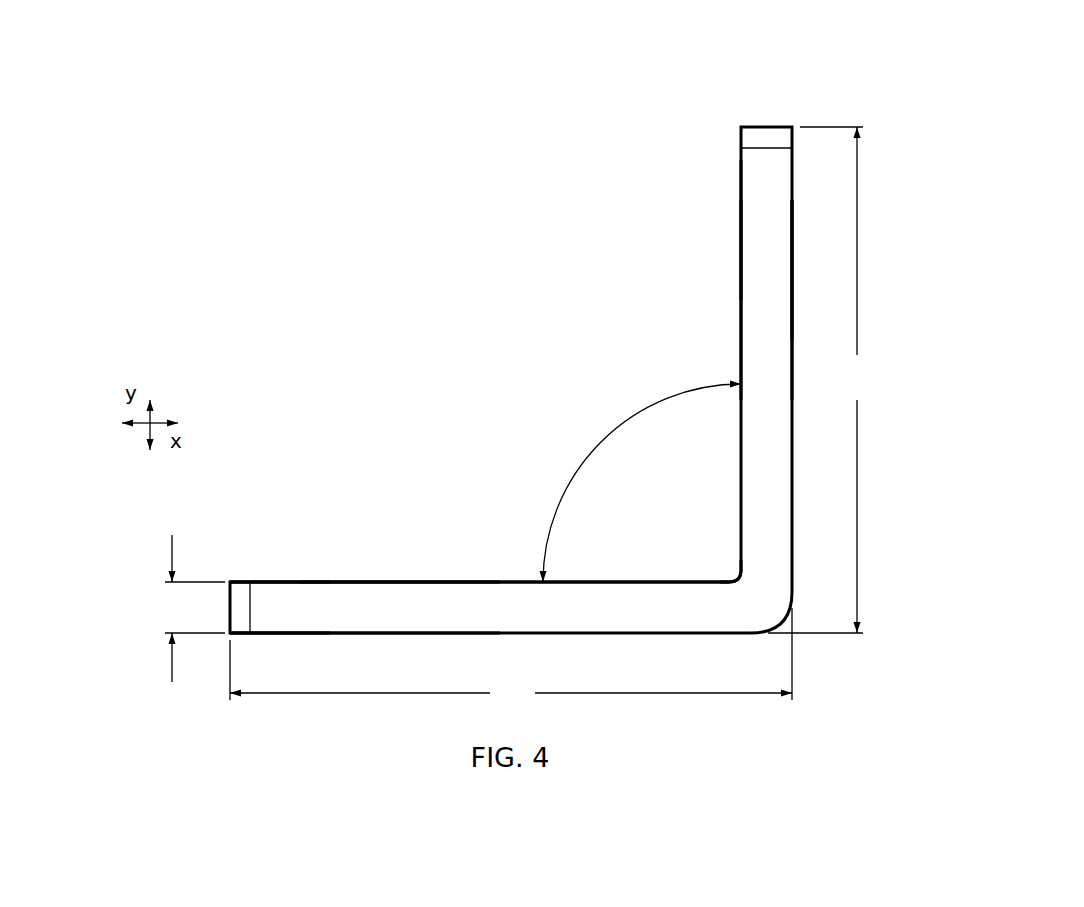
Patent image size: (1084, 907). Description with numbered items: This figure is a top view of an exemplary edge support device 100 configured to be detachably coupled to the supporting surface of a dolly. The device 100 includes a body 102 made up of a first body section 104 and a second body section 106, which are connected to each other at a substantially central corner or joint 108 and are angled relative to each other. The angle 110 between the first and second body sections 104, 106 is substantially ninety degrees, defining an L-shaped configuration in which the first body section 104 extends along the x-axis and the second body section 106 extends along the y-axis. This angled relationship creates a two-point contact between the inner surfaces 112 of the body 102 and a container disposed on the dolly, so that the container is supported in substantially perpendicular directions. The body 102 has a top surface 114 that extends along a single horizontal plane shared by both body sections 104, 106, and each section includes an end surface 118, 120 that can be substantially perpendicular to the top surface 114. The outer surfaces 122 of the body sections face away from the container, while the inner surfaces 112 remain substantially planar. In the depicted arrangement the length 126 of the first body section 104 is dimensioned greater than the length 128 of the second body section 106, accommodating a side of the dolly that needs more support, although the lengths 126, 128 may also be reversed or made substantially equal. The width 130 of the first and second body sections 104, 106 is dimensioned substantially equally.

The edge support device 100 is at (817, 82).
The body 102 is at (447, 582).
The first body section 104 is at (352, 508).
The second body section 106 is at (712, 310).
The corner or joint 108 is at (752, 588).
The angle 110 is at (607, 432).
The inner surfaces 112 is at (741, 233).
The top surface 114 is at (292, 593).
The end surface 118 is at (228, 622).
The end surface 120 is at (770, 138).
The outer surfaces 122 is at (792, 297).
The length of the first body section 126 is at (527, 707).
The length of the second body section 128 is at (843, 392).
The width 130 is at (170, 562).